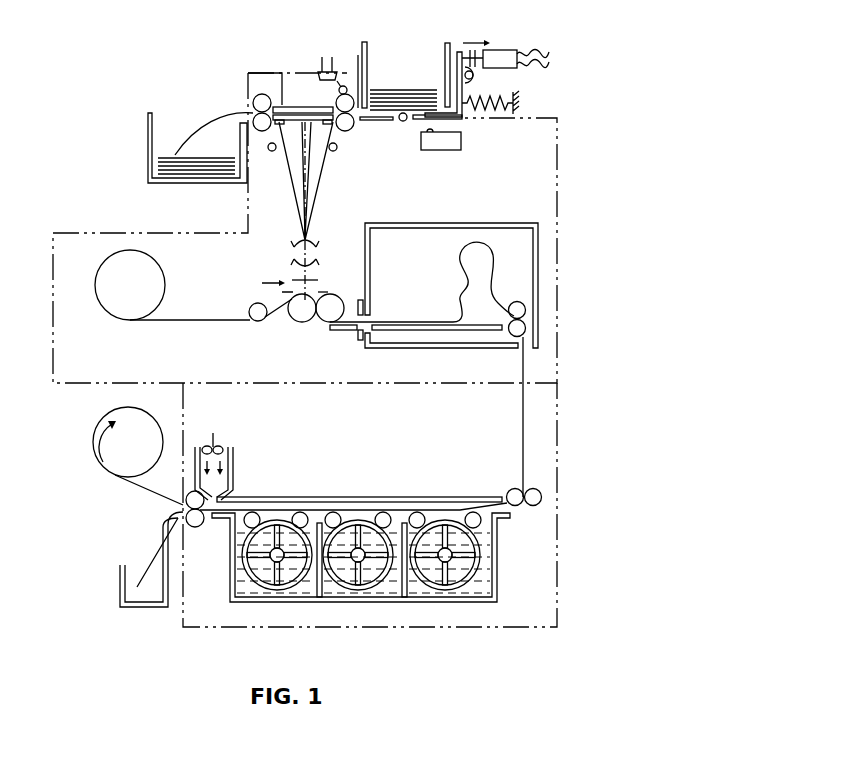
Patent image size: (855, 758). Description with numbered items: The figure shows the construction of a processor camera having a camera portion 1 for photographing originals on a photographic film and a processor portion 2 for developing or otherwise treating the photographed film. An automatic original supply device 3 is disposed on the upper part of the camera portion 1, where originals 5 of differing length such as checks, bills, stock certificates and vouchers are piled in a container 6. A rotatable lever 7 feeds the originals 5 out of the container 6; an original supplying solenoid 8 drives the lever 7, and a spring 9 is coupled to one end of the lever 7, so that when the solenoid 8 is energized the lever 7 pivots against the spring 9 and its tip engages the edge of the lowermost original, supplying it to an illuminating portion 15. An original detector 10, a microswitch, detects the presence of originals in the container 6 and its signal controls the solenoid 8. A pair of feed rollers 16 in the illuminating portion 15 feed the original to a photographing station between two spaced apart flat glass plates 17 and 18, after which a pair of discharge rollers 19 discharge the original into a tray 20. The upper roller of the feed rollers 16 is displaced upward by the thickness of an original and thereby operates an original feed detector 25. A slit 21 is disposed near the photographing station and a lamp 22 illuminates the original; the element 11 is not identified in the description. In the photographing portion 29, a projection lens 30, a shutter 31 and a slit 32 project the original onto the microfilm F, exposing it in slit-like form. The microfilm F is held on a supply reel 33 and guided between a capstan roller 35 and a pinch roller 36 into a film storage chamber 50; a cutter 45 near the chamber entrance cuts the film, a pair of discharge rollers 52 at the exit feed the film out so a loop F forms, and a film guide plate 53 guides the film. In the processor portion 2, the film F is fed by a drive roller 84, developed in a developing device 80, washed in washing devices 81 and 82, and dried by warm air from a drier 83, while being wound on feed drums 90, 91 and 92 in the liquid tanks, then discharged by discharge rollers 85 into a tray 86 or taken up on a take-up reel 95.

The camera portion 1 is at (560, 133).
The processor portion 2 is at (558, 565).
The automatic original supply device 3 is at (421, 65).
The originals 5 is at (400, 88).
The container 6 is at (366, 43).
The rotatable lever 7 is at (461, 93).
The original supplying solenoid 8 is at (503, 50).
The spring 9 is at (513, 98).
The original detector 10 is at (442, 151).
The guide plate 11 is at (357, 88).
The illuminating portion 15 is at (297, 82).
The feed rollers 16 is at (353, 124).
The flat glass plate 17 is at (315, 124).
The flat glass plate 18 is at (281, 74).
The discharge rollers 19 is at (253, 98).
The tray 20 is at (182, 122).
The slit 21 is at (279, 125).
The lamp 22 is at (270, 151).
The original feed detector 25 is at (320, 57).
The photographing portion 29 is at (261, 282).
The projection lens 30 is at (312, 250).
The shutter 31 is at (297, 277).
The slit 32 is at (318, 290).
The supply reel 33 is at (162, 261).
The capstan roller 35 is at (299, 323).
The pinch roller 36 is at (328, 323).
The cutter 45 is at (363, 300).
The film storage chamber 50 is at (492, 223).
The discharge rollers 52 is at (513, 302).
The film guide plate 53 is at (478, 332).
The developing device 80 is at (472, 593).
The washing device 81 is at (383, 593).
The washing device 82 is at (298, 593).
The drier 83 is at (231, 453).
The drive roller 84 is at (535, 506).
The discharge rollers 85 is at (200, 527).
The tray 86 is at (155, 607).
The feed drum 90 is at (448, 518).
The feed drum 91 is at (364, 518).
The feed drum 92 is at (283, 520).
The take-up reel 95 is at (102, 460).
The microfilm F is at (180, 325).